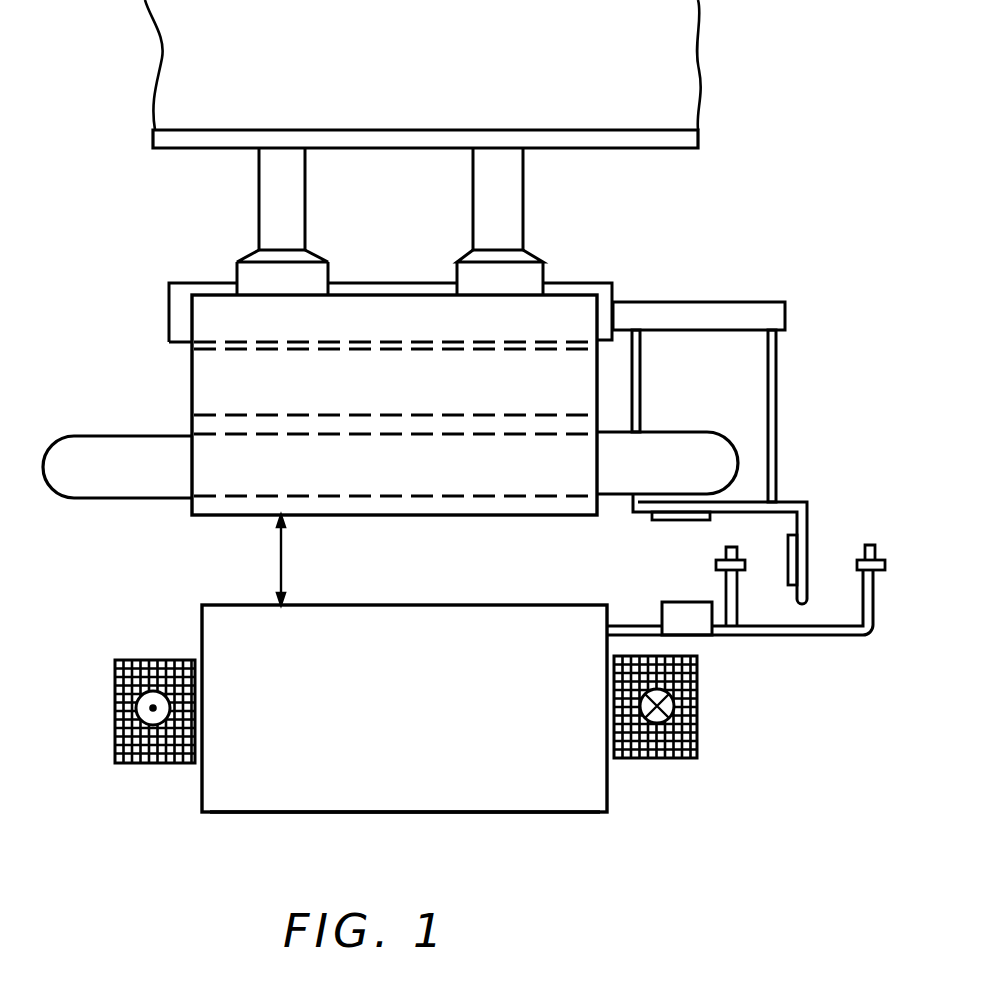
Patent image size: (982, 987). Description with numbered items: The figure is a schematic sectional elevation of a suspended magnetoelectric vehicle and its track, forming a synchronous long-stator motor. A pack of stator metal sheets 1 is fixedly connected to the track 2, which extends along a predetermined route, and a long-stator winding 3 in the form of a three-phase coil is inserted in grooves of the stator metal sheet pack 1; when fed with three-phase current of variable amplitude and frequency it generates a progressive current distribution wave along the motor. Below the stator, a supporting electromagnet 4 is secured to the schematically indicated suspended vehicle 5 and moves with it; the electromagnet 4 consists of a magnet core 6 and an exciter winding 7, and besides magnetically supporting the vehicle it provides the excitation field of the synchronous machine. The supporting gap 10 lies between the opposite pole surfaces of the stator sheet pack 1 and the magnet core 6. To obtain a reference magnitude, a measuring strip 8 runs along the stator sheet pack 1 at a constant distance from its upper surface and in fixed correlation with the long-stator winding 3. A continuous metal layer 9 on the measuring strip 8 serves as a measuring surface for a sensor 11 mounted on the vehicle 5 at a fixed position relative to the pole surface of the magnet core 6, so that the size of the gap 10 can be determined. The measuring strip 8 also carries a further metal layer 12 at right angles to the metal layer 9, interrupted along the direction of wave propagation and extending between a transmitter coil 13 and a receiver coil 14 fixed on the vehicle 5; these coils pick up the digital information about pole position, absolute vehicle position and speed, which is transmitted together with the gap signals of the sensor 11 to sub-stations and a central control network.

The pack of stator metal sheets 1 is at (210, 382).
The track 2 is at (688, 78).
The long-stator winding 3 is at (120, 455).
The supporting electromagnet 4 is at (283, 814).
The suspended vehicle 5 is at (707, 677).
The magnet core 6 is at (497, 792).
The exciter winding 7 is at (165, 747).
The measuring strip 8 is at (790, 503).
The continuous metal layer 9 is at (658, 520).
The supporting gap 10 is at (280, 560).
The sensor 11 is at (692, 618).
The further metal layer 12 is at (798, 552).
The transmitter coil 13 is at (717, 563).
The receiver coil 14 is at (862, 560).